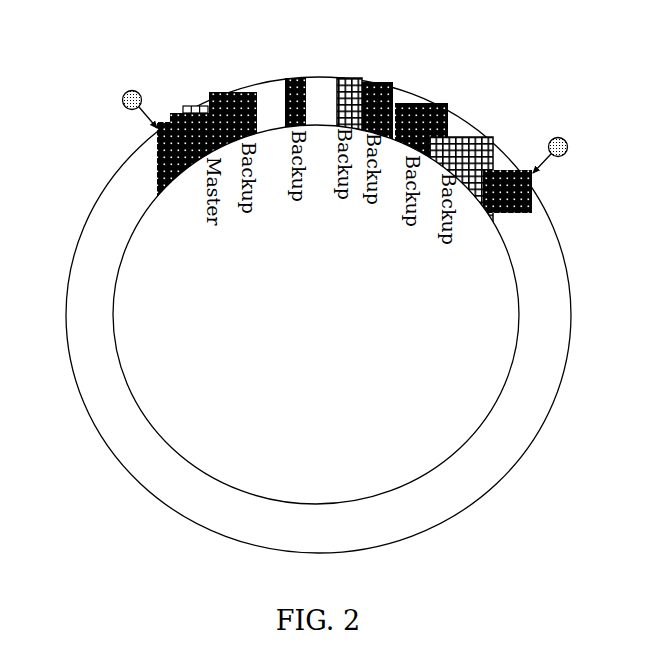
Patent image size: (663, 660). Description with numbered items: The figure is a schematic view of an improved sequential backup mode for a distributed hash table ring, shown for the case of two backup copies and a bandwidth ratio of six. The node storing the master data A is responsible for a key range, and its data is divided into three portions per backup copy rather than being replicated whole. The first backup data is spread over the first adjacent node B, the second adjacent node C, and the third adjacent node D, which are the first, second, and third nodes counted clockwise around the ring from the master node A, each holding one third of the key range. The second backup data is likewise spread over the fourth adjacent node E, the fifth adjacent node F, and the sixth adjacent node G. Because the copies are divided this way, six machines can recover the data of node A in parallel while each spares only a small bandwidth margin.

The node storing the master data A is at (200, 104).
The first adjacent node B is at (269, 79).
The second adjacent node C is at (318, 73).
The third adjacent node D is at (377, 78).
The fourth adjacent node E is at (418, 93).
The fifth adjacent node F is at (462, 117).
The sixth adjacent node G is at (502, 147).